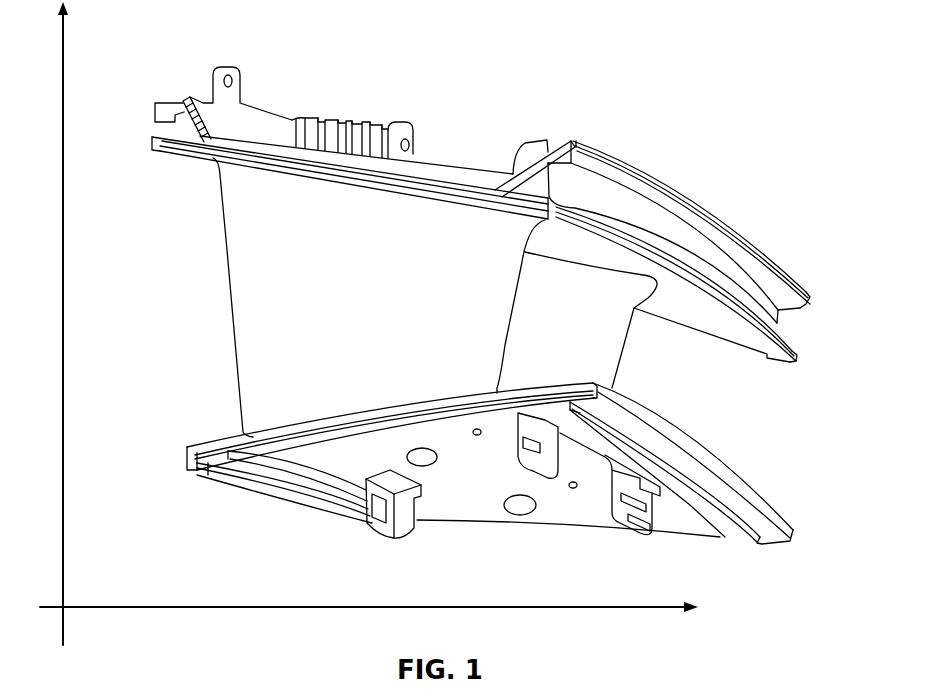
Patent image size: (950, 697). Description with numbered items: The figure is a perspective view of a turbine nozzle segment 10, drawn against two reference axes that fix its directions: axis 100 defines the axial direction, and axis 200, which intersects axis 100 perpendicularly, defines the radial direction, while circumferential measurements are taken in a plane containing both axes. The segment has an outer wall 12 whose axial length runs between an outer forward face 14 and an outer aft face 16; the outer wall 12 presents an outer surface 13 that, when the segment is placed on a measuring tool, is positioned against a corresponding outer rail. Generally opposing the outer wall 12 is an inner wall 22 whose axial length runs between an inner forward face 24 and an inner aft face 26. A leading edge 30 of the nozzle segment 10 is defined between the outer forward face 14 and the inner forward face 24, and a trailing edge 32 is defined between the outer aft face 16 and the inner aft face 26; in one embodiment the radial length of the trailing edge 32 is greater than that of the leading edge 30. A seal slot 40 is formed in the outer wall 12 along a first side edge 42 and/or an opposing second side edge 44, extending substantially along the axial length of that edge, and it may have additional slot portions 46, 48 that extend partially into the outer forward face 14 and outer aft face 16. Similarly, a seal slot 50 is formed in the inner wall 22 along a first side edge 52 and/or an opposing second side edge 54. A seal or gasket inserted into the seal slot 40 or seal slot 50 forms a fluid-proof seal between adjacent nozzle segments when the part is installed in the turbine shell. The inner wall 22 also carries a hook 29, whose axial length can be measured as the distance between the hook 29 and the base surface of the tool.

The turbine nozzle segment 10 is at (590, 86).
The outer wall 12 is at (418, 173).
The outer surface 13 is at (736, 226).
The outer forward face 14 is at (637, 183).
The outer aft face 16 is at (153, 110).
The inner wall 22 is at (483, 510).
The inner forward face 24 is at (717, 465).
The inner aft face 26 is at (186, 455).
The hook 29 is at (393, 533).
The leading edge 30 is at (625, 348).
The trailing edge 32 is at (240, 333).
The seal slot 40 is at (268, 150).
The first side edge 42 is at (470, 173).
The second side edge 44 is at (782, 328).
The slot portion 46 is at (520, 140).
The slot portion 48 is at (182, 97).
The seal slot 50 is at (222, 438).
The first side edge 52 is at (197, 465).
The second side edge 54 is at (680, 543).
The axis 100 is at (490, 607).
The axis 200 is at (64, 38).